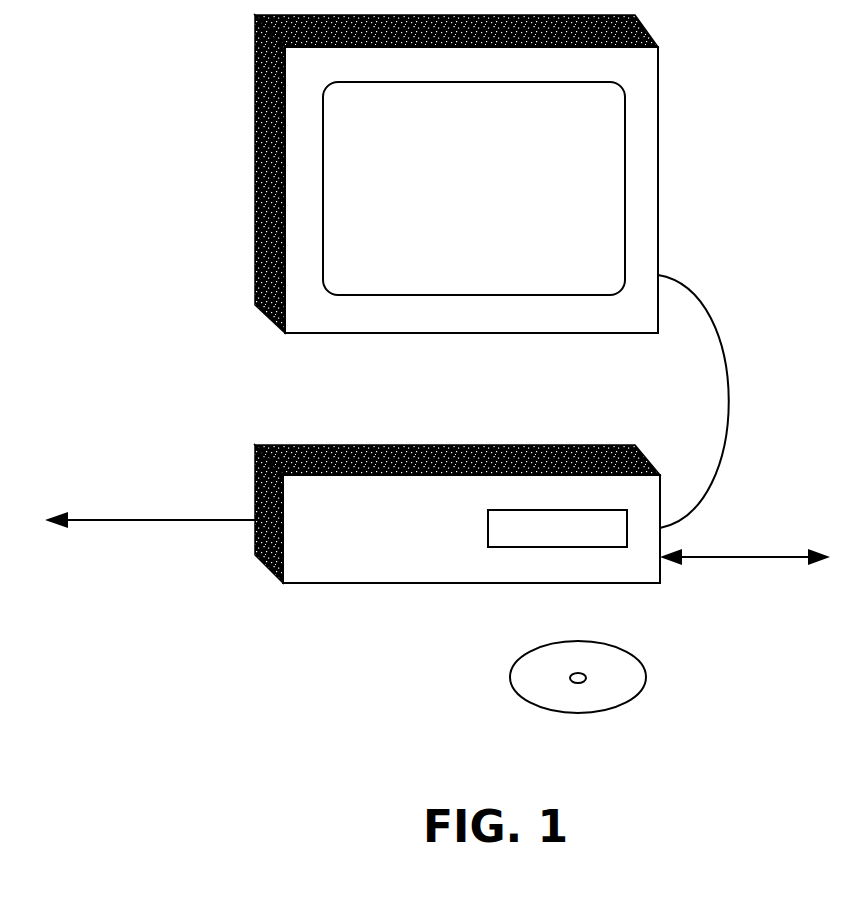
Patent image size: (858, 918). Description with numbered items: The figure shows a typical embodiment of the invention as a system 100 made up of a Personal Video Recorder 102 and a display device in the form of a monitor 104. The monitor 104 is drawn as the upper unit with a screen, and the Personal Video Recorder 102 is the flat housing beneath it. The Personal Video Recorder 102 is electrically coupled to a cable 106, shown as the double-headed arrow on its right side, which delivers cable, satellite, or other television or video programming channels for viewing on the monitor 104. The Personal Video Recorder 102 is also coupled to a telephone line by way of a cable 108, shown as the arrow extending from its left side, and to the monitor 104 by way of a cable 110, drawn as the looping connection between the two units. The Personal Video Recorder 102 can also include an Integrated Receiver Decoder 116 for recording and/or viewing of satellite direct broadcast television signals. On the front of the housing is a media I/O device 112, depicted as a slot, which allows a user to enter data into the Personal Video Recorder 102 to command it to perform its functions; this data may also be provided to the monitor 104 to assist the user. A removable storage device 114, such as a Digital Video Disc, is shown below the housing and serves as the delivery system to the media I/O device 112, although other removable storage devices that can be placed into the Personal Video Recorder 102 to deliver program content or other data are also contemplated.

The system 100 is at (182, 117).
The Personal Video Recorder 102 is at (388, 447).
The monitor 104 is at (658, 125).
The cable 106 is at (727, 558).
The cable 108 is at (190, 520).
The cable 110 is at (712, 317).
The media I/O device 112 is at (518, 530).
The removable storage device 114 is at (615, 710).
The Integrated Receiver Decoder 116 is at (302, 612).